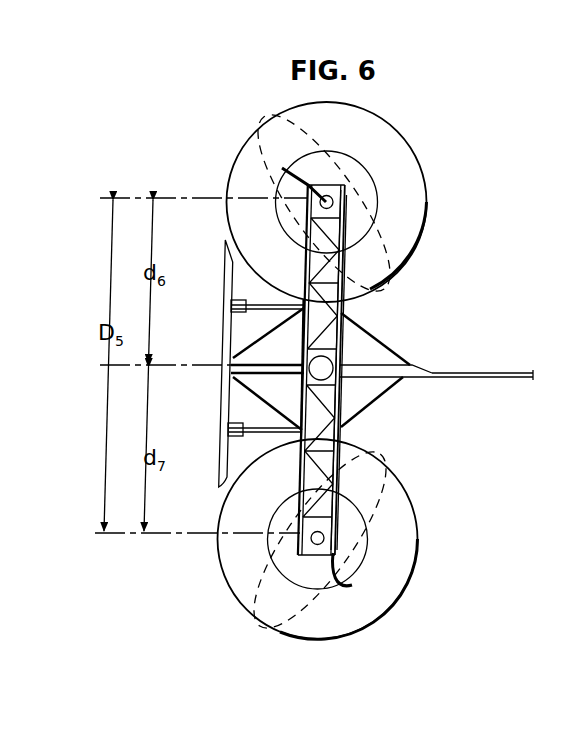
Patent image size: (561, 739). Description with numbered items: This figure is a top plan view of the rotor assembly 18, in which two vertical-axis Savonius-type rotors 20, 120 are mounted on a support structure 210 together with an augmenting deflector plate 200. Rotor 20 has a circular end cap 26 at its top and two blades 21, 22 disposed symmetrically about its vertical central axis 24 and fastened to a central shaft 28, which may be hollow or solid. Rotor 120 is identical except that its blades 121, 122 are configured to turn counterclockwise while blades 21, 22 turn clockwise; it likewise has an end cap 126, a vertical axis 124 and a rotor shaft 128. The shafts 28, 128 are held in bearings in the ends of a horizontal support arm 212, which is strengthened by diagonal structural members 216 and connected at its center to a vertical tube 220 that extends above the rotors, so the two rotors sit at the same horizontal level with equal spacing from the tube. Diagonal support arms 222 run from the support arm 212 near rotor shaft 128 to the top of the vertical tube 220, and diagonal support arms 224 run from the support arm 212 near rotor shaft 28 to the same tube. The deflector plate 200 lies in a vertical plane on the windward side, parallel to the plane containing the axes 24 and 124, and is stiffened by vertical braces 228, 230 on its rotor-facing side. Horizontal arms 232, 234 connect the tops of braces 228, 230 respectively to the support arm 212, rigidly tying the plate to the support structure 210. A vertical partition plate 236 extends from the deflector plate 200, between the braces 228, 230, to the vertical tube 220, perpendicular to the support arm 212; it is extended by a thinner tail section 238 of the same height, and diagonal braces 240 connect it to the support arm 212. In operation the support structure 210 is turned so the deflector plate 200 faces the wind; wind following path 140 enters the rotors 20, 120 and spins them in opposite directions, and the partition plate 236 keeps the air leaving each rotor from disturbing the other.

The rotor assembly 18 is at (438, 246).
The Savonius-type rotor 20 is at (386, 119).
The blade 21 is at (282, 120).
The blade 22 is at (381, 283).
The vertical central axis 24 is at (291, 180).
The circular end cap 26 is at (423, 173).
The central shaft 28 is at (330, 200).
The Savonius-type rotor 120 is at (414, 506).
The blade 121 is at (272, 617).
The blade 122 is at (380, 465).
The vertical axis 124 is at (362, 575).
The circular end cap 126 is at (414, 568).
The rotor shaft 128 is at (323, 537).
The wind path 140 is at (176, 153).
The deflector plate 200 is at (222, 477).
The support structure 210 is at (346, 306).
The support arm 212 is at (345, 332).
The diagonal structural member 216 is at (346, 414).
The vertical tube 220 is at (323, 367).
The diagonal support arm 222 is at (298, 437).
The diagonal support arm 224 is at (308, 222).
The vertical brace 228 is at (228, 430).
The vertical brace 230 is at (234, 310).
The horizontal arm 232 is at (272, 428).
The horizontal arm 234 is at (268, 306).
The partition plate 236 is at (420, 368).
The tail section 238 is at (500, 378).
The diagonal brace 240 is at (278, 336).